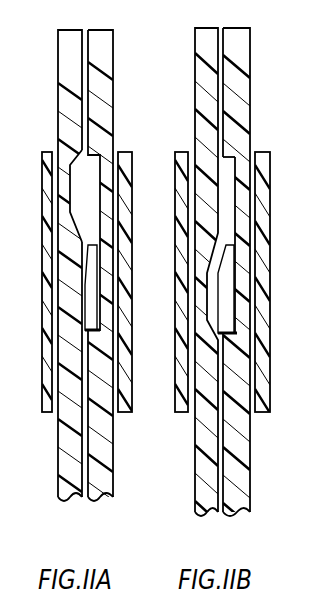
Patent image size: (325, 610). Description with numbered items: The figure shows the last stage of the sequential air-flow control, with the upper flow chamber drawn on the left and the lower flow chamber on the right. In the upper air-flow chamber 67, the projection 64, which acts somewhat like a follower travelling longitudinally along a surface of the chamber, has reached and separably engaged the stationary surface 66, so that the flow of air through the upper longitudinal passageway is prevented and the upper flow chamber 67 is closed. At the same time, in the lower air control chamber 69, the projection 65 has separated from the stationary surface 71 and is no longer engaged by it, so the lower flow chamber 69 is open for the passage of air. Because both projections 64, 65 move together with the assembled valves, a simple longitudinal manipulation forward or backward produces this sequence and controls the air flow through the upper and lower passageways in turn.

In FIG. 11A, the projection 64 is at (93, 267).
In FIG. 11B, the projection 65 is at (226, 300).
In FIG. 11A, the stationary surface 66 is at (57, 471).
In FIG. 11A, the upper air-flow chamber 67 is at (87, 192).
In FIG. 11B, the lower air control chamber 69 is at (227, 183).
In FIG. 11B, the stationary surface 71 is at (194, 438).